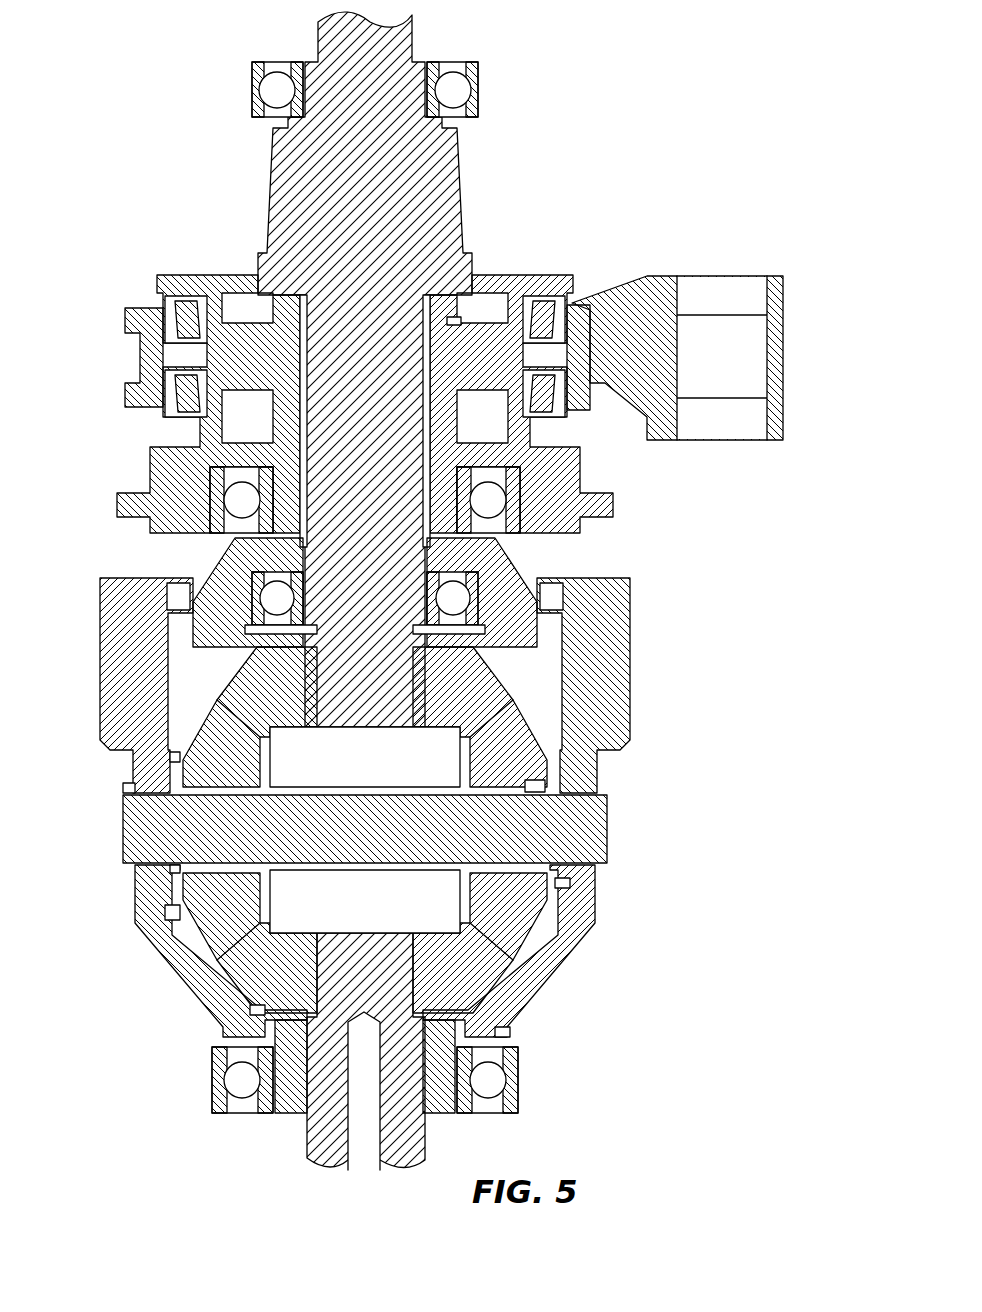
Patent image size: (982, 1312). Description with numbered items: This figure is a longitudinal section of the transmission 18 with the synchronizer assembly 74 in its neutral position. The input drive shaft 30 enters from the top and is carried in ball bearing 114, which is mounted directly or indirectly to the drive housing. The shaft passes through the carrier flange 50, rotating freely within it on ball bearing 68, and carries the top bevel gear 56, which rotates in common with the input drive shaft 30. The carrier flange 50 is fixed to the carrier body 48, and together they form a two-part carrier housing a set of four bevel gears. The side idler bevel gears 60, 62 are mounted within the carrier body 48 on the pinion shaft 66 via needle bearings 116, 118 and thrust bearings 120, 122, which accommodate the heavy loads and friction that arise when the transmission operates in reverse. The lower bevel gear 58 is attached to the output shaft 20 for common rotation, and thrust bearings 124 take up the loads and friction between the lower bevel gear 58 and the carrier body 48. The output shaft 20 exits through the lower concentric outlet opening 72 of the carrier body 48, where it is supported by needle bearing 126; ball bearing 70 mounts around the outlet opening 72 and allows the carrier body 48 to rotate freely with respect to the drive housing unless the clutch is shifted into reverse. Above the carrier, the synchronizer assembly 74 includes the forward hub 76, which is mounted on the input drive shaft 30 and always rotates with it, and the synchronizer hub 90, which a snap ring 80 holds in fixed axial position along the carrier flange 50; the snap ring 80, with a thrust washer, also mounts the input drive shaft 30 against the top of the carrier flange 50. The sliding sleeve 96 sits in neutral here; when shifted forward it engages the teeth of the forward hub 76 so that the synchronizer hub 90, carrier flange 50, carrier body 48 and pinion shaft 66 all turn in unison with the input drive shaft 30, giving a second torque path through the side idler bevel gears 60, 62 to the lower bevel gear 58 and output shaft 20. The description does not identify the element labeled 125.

The transmission 18 is at (150, 149).
The output shaft 20 is at (318, 1137).
The input drive shaft 30 is at (447, 175).
The carrier body 48 is at (582, 930).
The carrier flange 50 is at (517, 580).
The top bevel gear 56 is at (487, 665).
The lower bevel gear 58 is at (283, 947).
The side idler bevel gear 60 is at (200, 720).
The side idler bevel gear 62 is at (513, 723).
The pinion shaft 66 is at (607, 830).
The ball bearing 68 is at (478, 545).
The ball bearing 70 is at (495, 1068).
The lower concentric outlet opening 72 is at (288, 1115).
The synchronizer assembly 74 is at (741, 252).
The forward hub 76 is at (440, 303).
The snap ring 80 is at (457, 322).
The synchronizer hub 90 is at (573, 412).
The sliding sleeve 96 is at (572, 303).
The ball bearing 114 is at (477, 72).
The needle bearing 116 is at (135, 790).
The needle bearing 118 is at (533, 787).
The thrust bearing 120 is at (175, 870).
The thrust bearing 122 is at (563, 883).
The thrust bearings 124 is at (503, 1032).
The washer 125 is at (177, 757).
The needle bearing 126 is at (470, 1070).